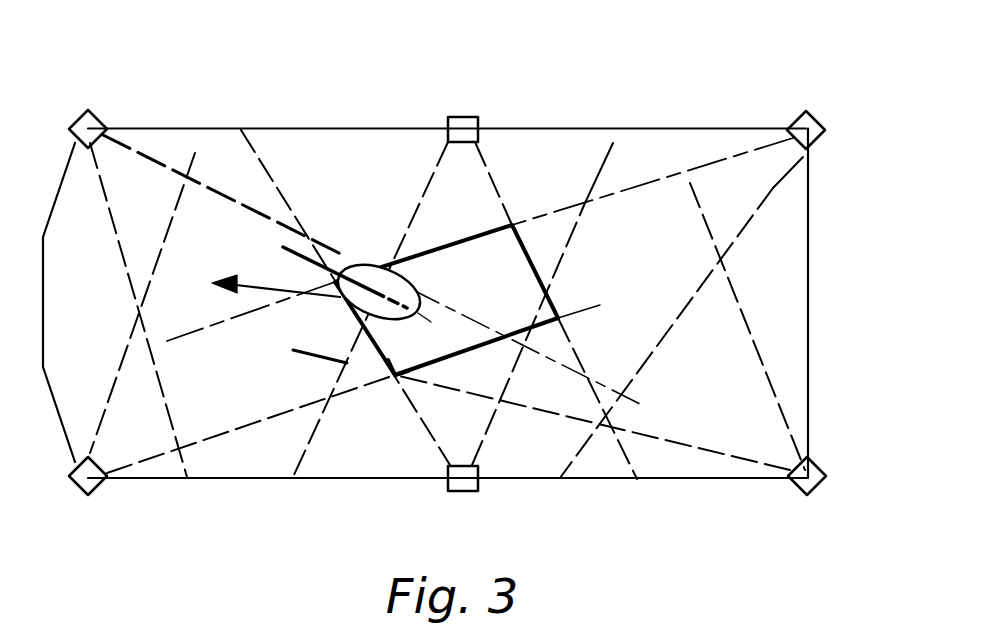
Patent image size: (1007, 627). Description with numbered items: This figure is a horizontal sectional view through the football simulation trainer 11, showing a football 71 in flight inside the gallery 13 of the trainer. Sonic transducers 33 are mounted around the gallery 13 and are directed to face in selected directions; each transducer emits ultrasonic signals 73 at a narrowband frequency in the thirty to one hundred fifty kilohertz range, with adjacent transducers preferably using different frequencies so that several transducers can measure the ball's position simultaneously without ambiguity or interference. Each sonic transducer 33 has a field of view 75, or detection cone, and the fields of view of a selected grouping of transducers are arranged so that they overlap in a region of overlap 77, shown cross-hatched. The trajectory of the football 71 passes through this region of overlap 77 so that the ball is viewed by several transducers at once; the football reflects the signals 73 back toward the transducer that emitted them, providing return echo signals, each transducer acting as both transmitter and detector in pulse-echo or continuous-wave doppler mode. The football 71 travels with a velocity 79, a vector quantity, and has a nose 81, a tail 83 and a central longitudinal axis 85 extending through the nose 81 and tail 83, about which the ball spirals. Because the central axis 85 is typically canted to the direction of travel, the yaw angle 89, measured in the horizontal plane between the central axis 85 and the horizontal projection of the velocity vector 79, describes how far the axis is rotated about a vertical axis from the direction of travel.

The football simulation trainer 11 is at (282, 80).
The gallery 13 is at (658, 130).
The transducers 33 is at (100, 116).
The football 71 is at (385, 313).
The signals 73 is at (772, 186).
The field of view 75 is at (647, 267).
The region of overlap 77 is at (510, 268).
The velocity 79 is at (245, 290).
The nose 81 is at (340, 272).
The tail 83 is at (395, 375).
The central longitudinal axis 85 is at (291, 247).
The yaw angle 89 is at (298, 290).